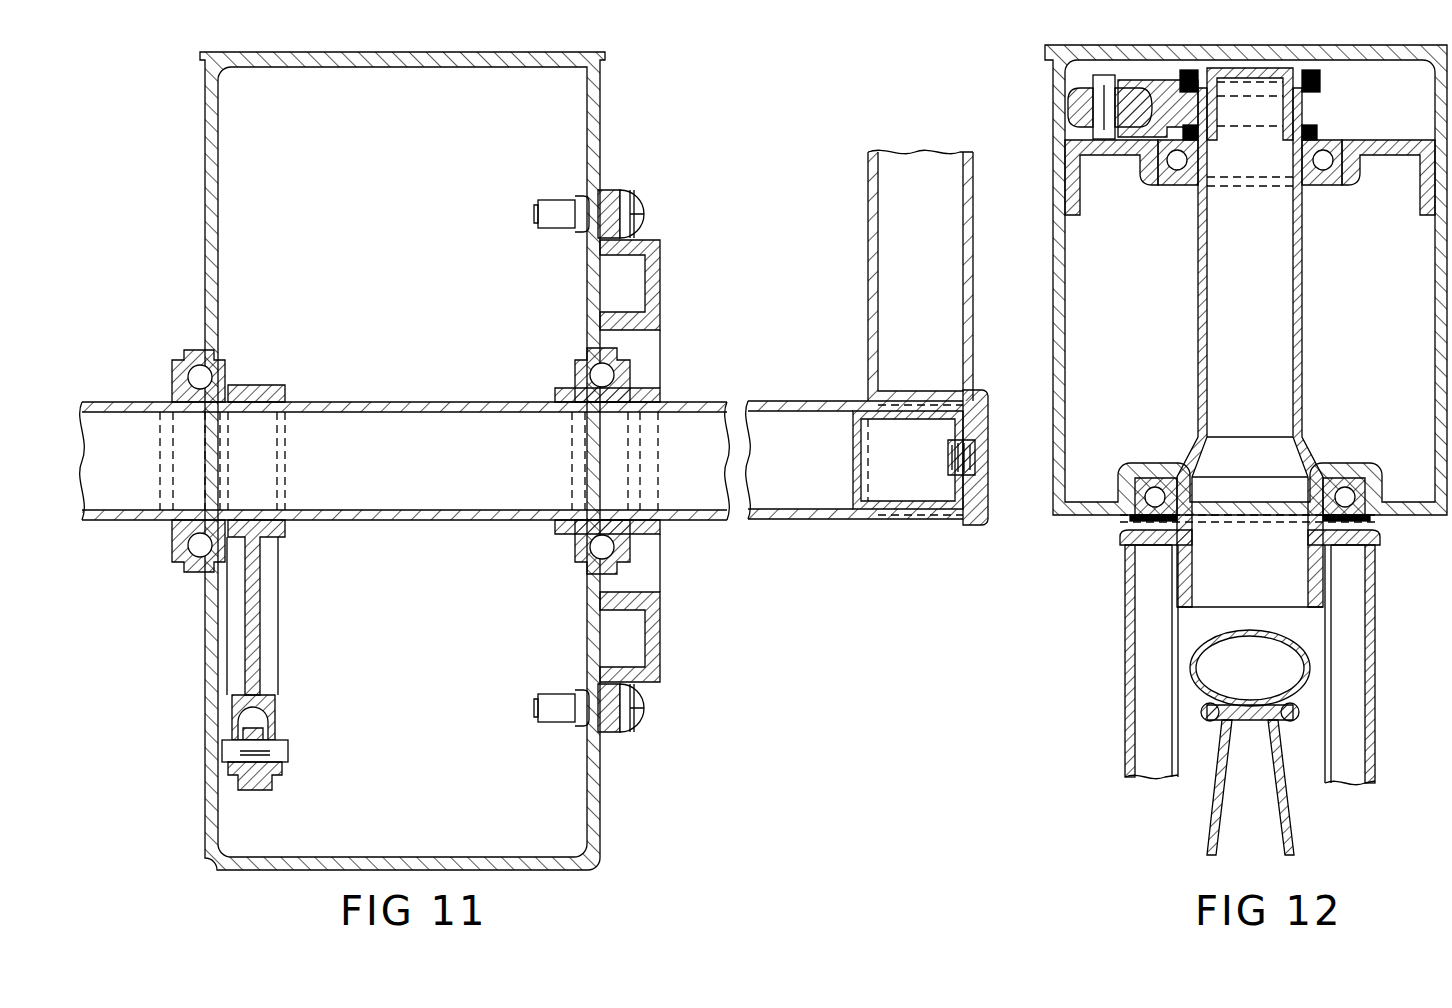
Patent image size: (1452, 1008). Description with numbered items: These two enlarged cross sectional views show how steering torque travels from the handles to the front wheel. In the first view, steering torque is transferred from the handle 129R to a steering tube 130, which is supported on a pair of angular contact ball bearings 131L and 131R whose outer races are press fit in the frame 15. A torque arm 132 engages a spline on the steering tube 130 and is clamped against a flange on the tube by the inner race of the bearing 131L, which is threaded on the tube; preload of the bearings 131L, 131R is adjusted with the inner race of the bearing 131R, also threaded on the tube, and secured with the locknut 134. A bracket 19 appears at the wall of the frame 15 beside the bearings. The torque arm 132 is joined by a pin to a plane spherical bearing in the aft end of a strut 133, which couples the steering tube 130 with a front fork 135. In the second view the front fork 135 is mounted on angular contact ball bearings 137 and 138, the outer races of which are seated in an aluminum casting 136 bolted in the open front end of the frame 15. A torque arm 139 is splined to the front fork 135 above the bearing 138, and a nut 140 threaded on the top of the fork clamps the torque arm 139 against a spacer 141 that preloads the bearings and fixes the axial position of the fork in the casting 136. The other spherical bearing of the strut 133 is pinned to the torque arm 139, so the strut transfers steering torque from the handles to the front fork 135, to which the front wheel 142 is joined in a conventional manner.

In FIG. 12, the frame 15 is at (1328, 50).
In FIG. 11, the upper mounting bracket 19 is at (660, 282).
In FIG. 11, the handle 129R is at (868, 262).
In FIG. 11, the steering tube 130 is at (776, 397).
In FIG. 11, the angular contact ball bearing 131L is at (180, 365).
In FIG. 11, the angular contact ball bearing 131R is at (628, 372).
In FIG. 11, the torque arm 132 is at (290, 718).
In FIG. 11, the strut 133 is at (262, 792).
In FIG. 12, the strut 133 is at (1067, 100).
In FIG. 11, the locknut 134 is at (655, 535).
In FIG. 12, the front fork 135 is at (1306, 330).
In FIG. 12, the aluminum casting 136 is at (1368, 150).
In FIG. 12, the angular contact ball bearing 137 is at (1330, 480).
In FIG. 12, the angular contact ball bearing 138 is at (1325, 168).
In FIG. 12, the torque arm 139 is at (1308, 105).
In FIG. 12, the nut 140 is at (1296, 85).
In FIG. 12, the spacer 141 is at (1318, 140).
In FIG. 12, the front wheel 142 is at (1213, 812).